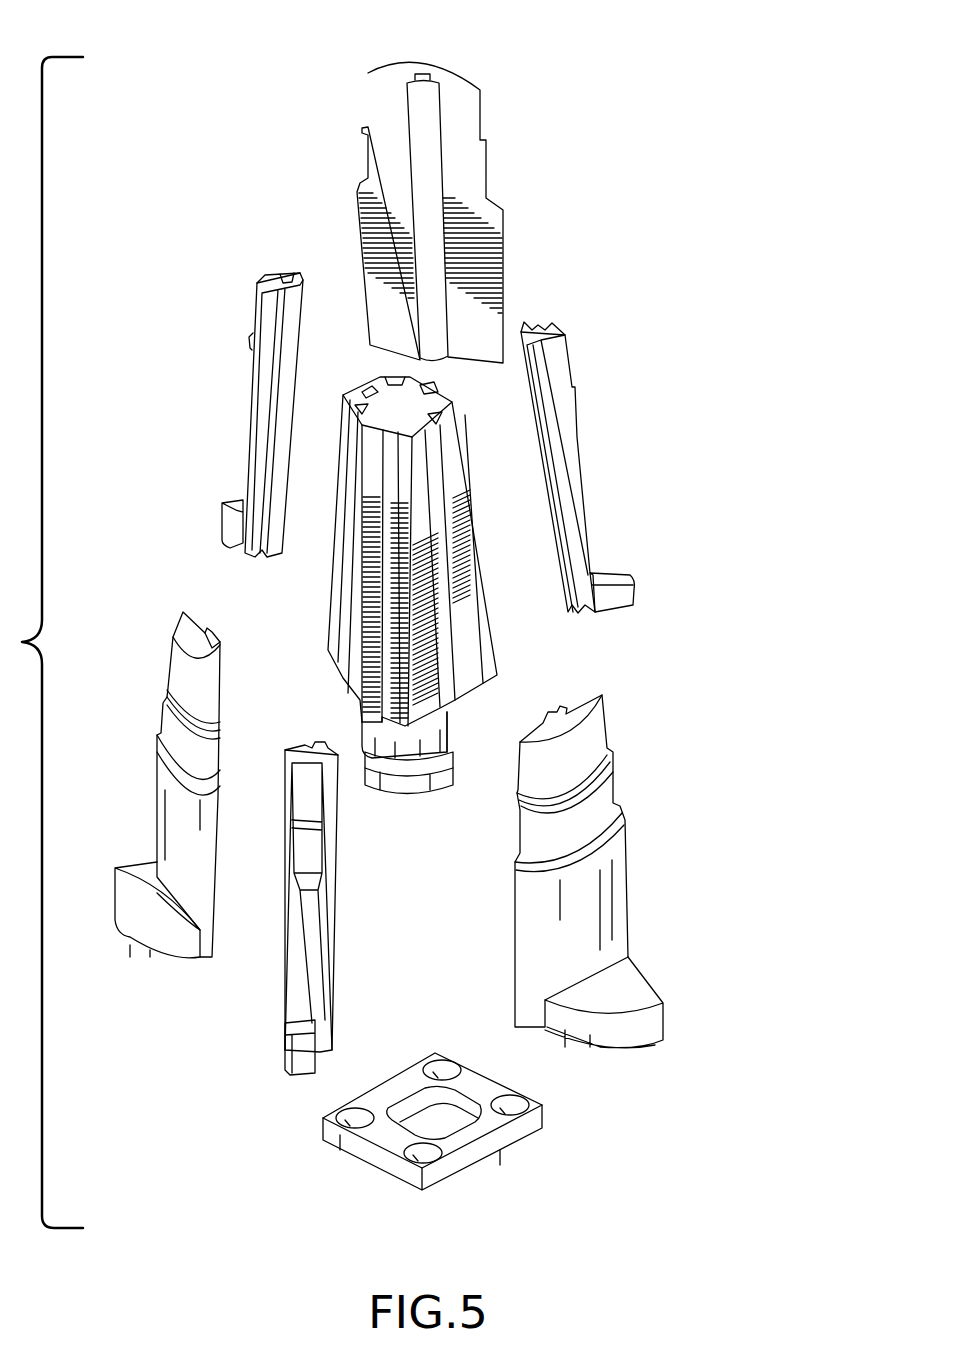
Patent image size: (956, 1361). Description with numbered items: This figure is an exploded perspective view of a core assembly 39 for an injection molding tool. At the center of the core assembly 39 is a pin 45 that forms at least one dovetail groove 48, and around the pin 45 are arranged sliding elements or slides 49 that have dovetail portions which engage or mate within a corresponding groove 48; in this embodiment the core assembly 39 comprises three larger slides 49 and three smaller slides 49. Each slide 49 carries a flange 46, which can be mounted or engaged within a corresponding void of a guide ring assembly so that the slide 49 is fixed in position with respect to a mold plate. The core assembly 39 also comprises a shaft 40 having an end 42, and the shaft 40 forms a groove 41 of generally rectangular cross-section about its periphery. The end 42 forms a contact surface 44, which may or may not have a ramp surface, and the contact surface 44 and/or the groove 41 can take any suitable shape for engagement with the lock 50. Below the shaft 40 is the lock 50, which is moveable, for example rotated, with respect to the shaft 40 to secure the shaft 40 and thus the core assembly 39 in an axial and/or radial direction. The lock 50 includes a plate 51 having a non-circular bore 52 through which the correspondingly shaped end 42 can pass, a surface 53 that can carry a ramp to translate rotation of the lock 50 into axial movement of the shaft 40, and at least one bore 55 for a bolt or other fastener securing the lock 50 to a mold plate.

The core assembly 39 is at (549, 112).
The shaft 40 is at (370, 737).
The groove 41 is at (368, 757).
The end 42 is at (418, 800).
The contact surface 44 is at (447, 760).
The pin 45 is at (392, 395).
The flange 46 is at (230, 507).
The dovetail groove 48 is at (365, 388).
The slide 49 is at (476, 228).
The lock 50 is at (523, 1160).
The plate 51 is at (545, 1128).
The non-circular bore 52 is at (445, 1115).
The surface 53 is at (397, 1080).
The bore 55 is at (445, 1070).